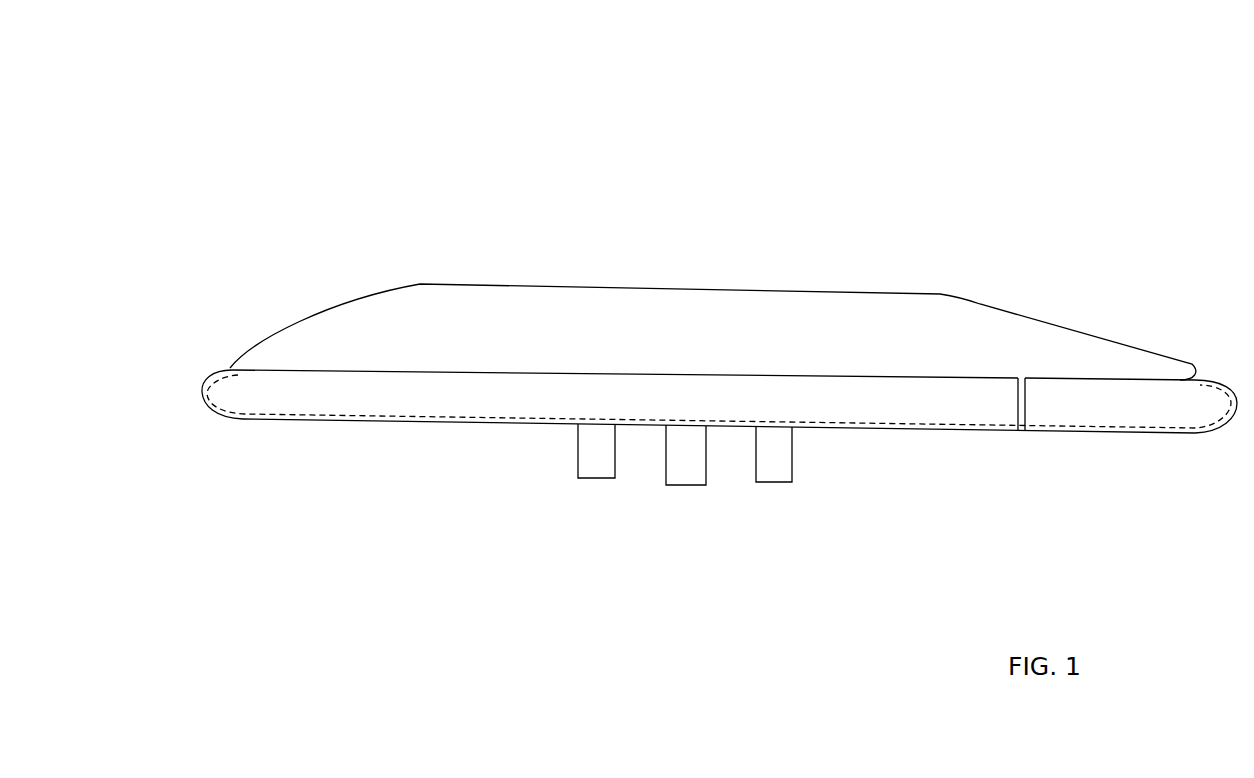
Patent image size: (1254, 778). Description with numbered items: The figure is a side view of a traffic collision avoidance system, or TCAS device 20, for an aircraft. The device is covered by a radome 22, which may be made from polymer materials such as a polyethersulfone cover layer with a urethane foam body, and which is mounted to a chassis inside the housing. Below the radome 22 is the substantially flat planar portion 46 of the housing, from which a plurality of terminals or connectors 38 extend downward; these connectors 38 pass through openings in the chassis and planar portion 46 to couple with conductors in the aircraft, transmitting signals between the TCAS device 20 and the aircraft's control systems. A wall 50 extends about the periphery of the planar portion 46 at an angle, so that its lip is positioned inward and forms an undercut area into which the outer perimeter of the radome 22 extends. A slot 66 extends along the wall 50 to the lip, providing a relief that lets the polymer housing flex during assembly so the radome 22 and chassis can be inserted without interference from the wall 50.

The TCAS device 20 is at (1055, 128).
The radome 22 is at (614, 284).
The connectors 38 is at (578, 467).
The planar portion 46 is at (433, 421).
The wall 50 is at (201, 380).
The slot 66 is at (1018, 392).